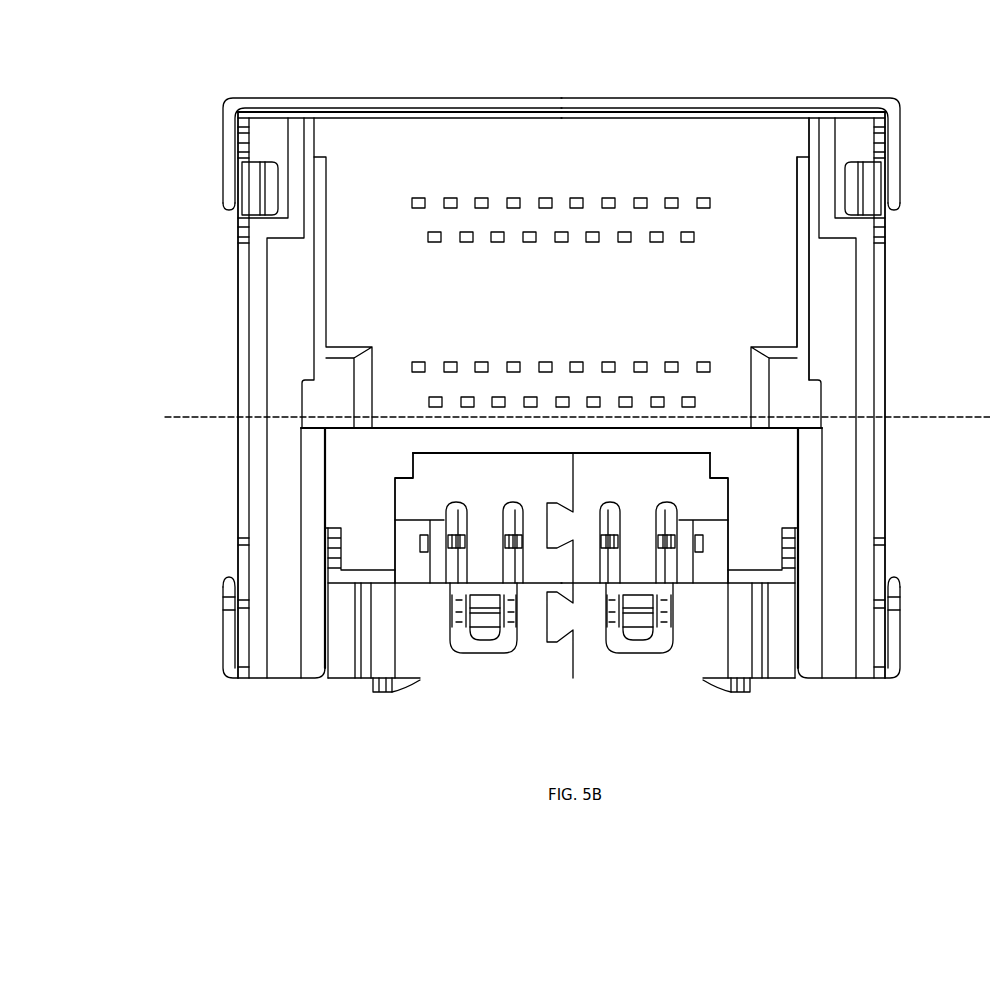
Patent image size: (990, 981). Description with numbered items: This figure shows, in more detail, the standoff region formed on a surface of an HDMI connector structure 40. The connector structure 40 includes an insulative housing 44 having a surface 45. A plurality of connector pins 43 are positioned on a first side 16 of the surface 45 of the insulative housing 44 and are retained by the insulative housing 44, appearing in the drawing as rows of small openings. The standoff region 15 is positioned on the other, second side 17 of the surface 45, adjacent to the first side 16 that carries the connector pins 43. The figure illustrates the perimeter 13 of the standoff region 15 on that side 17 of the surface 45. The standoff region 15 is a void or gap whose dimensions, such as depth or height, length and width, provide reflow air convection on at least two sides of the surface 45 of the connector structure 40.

The connector structure 40 is at (176, 121).
The perimeter 13 is at (735, 437).
The standoff region 15 is at (587, 487).
The first side 16 is at (286, 312).
The second side 17 is at (858, 457).
The connector pins 43 is at (412, 203).
The insulative housing 44 is at (775, 307).
The surface 45 is at (886, 262).